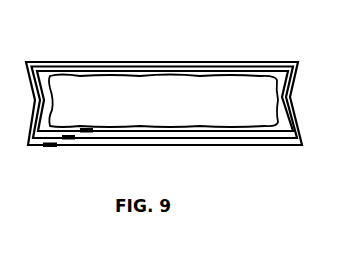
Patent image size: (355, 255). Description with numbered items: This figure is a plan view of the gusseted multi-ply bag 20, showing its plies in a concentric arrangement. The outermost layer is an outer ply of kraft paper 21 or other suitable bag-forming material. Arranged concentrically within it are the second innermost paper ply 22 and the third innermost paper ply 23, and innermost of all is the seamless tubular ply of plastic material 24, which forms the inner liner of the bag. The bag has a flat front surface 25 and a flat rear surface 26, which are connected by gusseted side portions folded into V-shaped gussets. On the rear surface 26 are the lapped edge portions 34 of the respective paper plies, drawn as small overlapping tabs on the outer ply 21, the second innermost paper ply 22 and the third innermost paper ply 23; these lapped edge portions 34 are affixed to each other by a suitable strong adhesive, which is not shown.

The gusseted multi-ply bag 20 is at (84, 56).
The outer ply of kraft paper 21 is at (300, 63).
The second innermost paper ply 22 is at (291, 77).
The third innermost paper ply 23 is at (284, 92).
The seamless tubular ply of plastic material 24 is at (276, 112).
The flat front surface 25 is at (152, 62).
The flat rear surface 26 is at (173, 147).
The lapped edge portions 34 is at (50, 146).